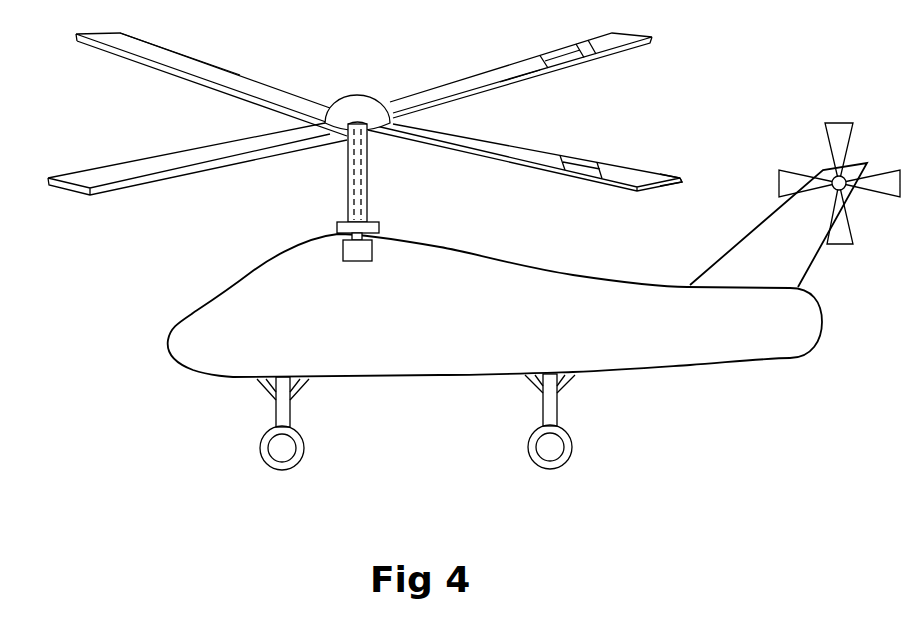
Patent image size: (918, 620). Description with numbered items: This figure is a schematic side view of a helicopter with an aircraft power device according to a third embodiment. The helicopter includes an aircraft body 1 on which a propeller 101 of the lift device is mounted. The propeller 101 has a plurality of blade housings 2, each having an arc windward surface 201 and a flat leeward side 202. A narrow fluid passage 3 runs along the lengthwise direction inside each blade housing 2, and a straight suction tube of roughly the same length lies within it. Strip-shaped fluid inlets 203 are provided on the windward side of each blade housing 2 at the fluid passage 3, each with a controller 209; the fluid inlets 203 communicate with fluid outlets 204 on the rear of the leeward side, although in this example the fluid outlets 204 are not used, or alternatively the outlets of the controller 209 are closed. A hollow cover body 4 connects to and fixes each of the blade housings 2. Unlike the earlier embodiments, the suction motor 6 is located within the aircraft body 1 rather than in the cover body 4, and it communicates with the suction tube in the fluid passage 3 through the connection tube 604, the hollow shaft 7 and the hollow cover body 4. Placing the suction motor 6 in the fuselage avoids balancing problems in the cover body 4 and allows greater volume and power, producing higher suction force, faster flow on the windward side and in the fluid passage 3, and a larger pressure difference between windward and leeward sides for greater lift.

The aircraft body 1 is at (440, 245).
The blade housing 2 is at (417, 95).
The fluid passage 3 is at (212, 87).
The cover body 4 is at (382, 102).
The suction motor 6 is at (357, 110).
The hollow shaft 7 is at (348, 182).
The connection tube 604 is at (357, 200).
The propeller 101 is at (230, 80).
The arc windward surface 201 is at (535, 63).
The flat leeward side 202 is at (523, 83).
The fluid inlet 203 is at (568, 60).
The fluid outlet 204 is at (630, 188).
The controller 209 is at (545, 60).